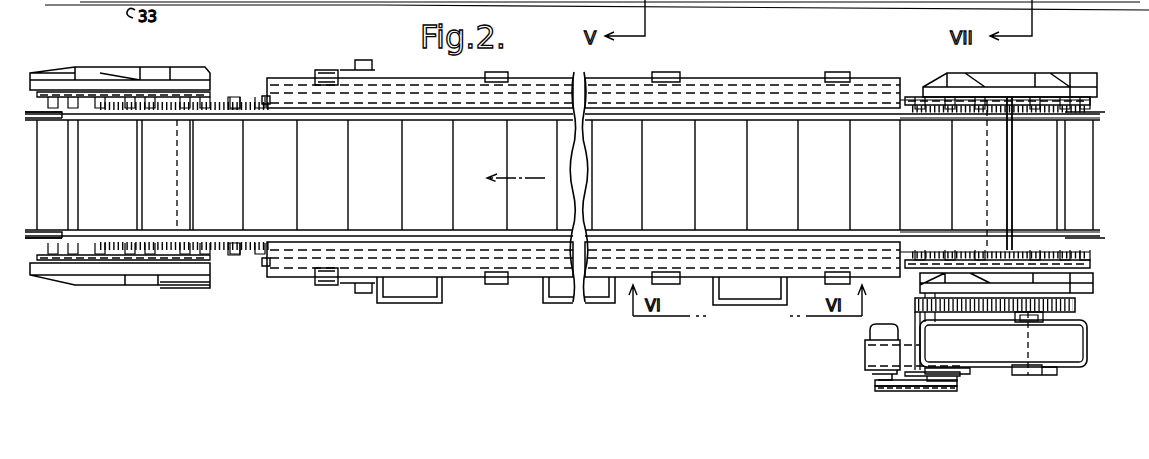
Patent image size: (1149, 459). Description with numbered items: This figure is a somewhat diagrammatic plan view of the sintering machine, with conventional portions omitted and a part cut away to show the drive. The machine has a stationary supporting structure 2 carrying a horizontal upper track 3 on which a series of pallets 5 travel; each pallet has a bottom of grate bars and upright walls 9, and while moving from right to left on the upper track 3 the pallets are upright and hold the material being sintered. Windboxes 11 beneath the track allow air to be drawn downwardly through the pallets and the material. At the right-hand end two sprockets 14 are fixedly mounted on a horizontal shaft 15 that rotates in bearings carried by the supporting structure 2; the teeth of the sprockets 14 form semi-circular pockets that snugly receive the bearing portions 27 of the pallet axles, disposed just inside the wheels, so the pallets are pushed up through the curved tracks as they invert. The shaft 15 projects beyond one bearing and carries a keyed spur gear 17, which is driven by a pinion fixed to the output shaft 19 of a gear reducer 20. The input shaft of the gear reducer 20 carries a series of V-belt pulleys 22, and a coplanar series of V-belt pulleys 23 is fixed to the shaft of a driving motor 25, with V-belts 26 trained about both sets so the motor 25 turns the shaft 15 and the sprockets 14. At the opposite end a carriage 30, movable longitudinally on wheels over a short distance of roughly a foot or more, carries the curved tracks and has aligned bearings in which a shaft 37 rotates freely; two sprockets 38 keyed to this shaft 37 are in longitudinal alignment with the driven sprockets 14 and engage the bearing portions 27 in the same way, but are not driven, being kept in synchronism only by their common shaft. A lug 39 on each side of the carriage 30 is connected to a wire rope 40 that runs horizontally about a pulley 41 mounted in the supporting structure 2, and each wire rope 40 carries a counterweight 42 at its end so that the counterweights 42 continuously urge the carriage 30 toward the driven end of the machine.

The stationary supporting structure 2 is at (1046, 80).
The horizontal upper track 3 is at (265, 88).
The pallets 5 is at (35, 170).
The upright walls 9 is at (40, 134).
The windboxes 11 is at (403, 290).
The sprockets 14 is at (922, 115).
The horizontal shaft 15 is at (984, 178).
The spur gear 17 is at (1078, 306).
The output shaft 19 is at (1033, 326).
The gear reducer 20 is at (976, 347).
The V-belt pulleys 22 is at (944, 390).
The V-belt pulleys 23 is at (878, 387).
The driving motor 25 is at (868, 356).
The V-belts 26 is at (892, 390).
The bearing portions 27 is at (56, 107).
The carriage 30 is at (66, 70).
The shaft 37 is at (176, 171).
The sprockets 38 is at (224, 102).
The lug 39 is at (173, 70).
The wire rope 40 is at (276, 70).
The pulley 41 is at (328, 64).
The counterweight 42 is at (379, 60).